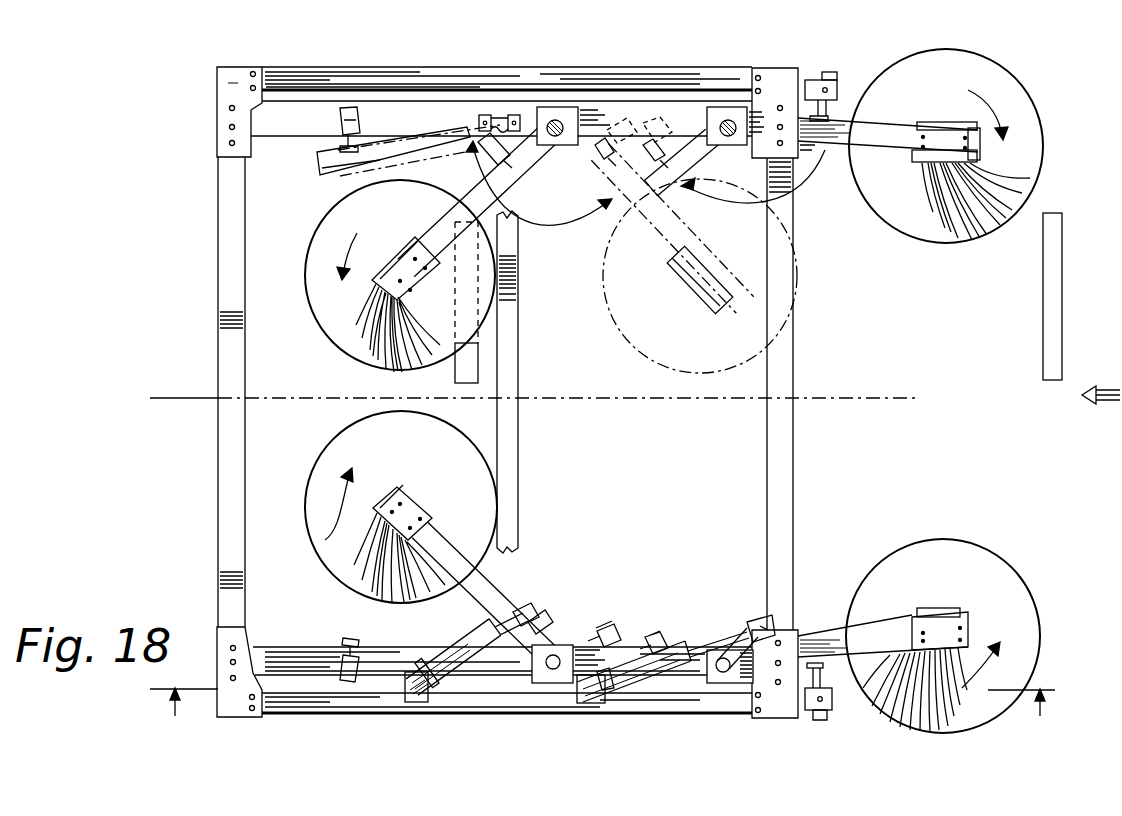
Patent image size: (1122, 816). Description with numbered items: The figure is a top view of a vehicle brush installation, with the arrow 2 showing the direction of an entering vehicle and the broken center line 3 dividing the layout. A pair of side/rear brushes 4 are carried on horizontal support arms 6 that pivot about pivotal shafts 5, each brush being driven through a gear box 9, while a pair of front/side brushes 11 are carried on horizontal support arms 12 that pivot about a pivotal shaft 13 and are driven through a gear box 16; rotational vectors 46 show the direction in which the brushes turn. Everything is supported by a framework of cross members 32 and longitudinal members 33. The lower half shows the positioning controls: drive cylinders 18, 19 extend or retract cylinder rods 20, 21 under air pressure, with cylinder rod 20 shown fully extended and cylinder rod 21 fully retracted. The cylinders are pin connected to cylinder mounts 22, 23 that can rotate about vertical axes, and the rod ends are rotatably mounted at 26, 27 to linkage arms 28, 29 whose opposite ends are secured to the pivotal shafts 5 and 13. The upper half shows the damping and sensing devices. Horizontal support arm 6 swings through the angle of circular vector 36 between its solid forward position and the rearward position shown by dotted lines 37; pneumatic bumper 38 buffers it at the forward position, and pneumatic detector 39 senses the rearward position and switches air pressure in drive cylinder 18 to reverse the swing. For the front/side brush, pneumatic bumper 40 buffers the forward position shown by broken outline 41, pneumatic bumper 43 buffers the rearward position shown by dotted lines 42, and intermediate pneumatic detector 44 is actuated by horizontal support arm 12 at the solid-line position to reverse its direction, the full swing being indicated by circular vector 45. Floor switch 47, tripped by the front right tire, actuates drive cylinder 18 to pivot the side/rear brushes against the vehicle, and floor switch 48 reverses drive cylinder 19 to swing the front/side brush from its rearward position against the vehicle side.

The arrow 2 is at (1080, 400).
The center line 3 is at (196, 398).
The side/rear brushes 4 is at (906, 243).
The pivotal shafts 5 is at (728, 122).
The horizontal support arms 6 is at (840, 130).
The gear box 9 is at (927, 122).
The front/side brushes 11 is at (317, 314).
The horizontal support arms 12 is at (520, 190).
The pivotal shaft 13 is at (553, 122).
The gear box 16 is at (433, 277).
The drive cylinder 18 is at (680, 657).
The drive cylinder 19 is at (453, 670).
The cylinder rod 20 is at (703, 655).
The cylinder rod 21 is at (522, 650).
The cylinder mount 22 is at (590, 703).
The cylinder mount 23 is at (406, 704).
The rotatable mounting 26 is at (757, 623).
The rotatable mounting 27 is at (511, 627).
The linkage arm 28 is at (731, 672).
The linkage arm 29 is at (551, 637).
The cross members 32 is at (218, 436).
The longitudinal members 33 is at (305, 118).
The circular vector 36 is at (822, 152).
The dotted lines 37 is at (680, 162).
The pneumatic bumper 38 is at (822, 78).
The pneumatic detector 39 is at (649, 134).
The pneumatic bumper 40 is at (612, 135).
The broken outline 41 is at (637, 327).
The dotted lines 42 is at (407, 150).
The pneumatic bumper 43 is at (348, 107).
The intermediate pneumatic detector 44 is at (528, 152).
The circular vector 45 is at (563, 212).
The rotational vectors 46 is at (997, 117).
The floor switch 47 is at (1065, 286).
The floor switch 48 is at (517, 370).